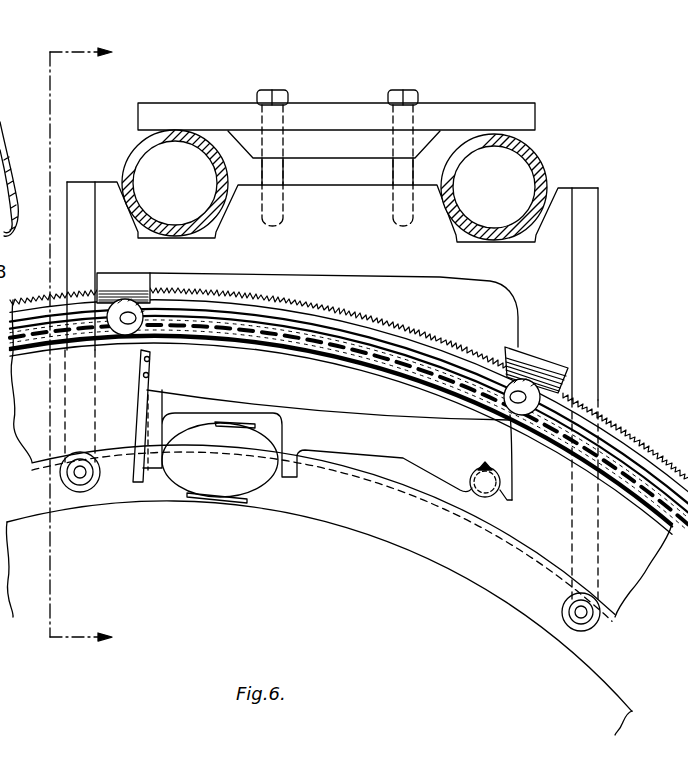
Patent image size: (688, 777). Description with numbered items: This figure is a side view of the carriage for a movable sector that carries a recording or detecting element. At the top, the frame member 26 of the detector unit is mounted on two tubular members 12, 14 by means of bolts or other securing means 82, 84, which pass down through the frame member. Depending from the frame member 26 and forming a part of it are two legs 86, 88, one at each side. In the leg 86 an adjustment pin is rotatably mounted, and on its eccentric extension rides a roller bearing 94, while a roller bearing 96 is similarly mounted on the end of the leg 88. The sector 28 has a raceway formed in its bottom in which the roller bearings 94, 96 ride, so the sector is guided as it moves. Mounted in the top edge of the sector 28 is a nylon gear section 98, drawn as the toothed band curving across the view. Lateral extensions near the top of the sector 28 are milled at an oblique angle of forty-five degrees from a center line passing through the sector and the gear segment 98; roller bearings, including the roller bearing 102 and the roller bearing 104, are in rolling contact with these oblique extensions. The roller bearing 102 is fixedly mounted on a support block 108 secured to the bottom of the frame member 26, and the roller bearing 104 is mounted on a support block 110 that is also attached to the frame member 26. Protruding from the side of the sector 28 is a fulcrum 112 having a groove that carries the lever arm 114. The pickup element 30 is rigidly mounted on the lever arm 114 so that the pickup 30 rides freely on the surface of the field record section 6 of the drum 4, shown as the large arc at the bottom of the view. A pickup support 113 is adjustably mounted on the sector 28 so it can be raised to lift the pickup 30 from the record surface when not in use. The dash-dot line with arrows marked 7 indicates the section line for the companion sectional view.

The drum 4 is at (258, 575).
The field record section 6 is at (388, 550).
The section line 7 is at (89, 344).
The tubular member 12 is at (542, 158).
The tubular member 14 is at (135, 158).
The frame member 26 is at (348, 141).
The sector 28 is at (251, 379).
The pickup element 30 is at (255, 485).
The bolt 82 is at (283, 90).
The bolt 84 is at (414, 90).
The leg 86 is at (78, 392).
The leg 88 is at (577, 492).
The roller bearing 94 is at (63, 482).
The roller bearing 96 is at (590, 628).
The nylon gear section 98 is at (50, 292).
The roller bearing 102 is at (147, 317).
The roller bearing 104 is at (507, 380).
The support block 108 is at (145, 280).
The support block 110 is at (523, 353).
The fulcrum 112 is at (487, 493).
The pickup support 113 is at (140, 478).
The lever arm 114 is at (310, 412).